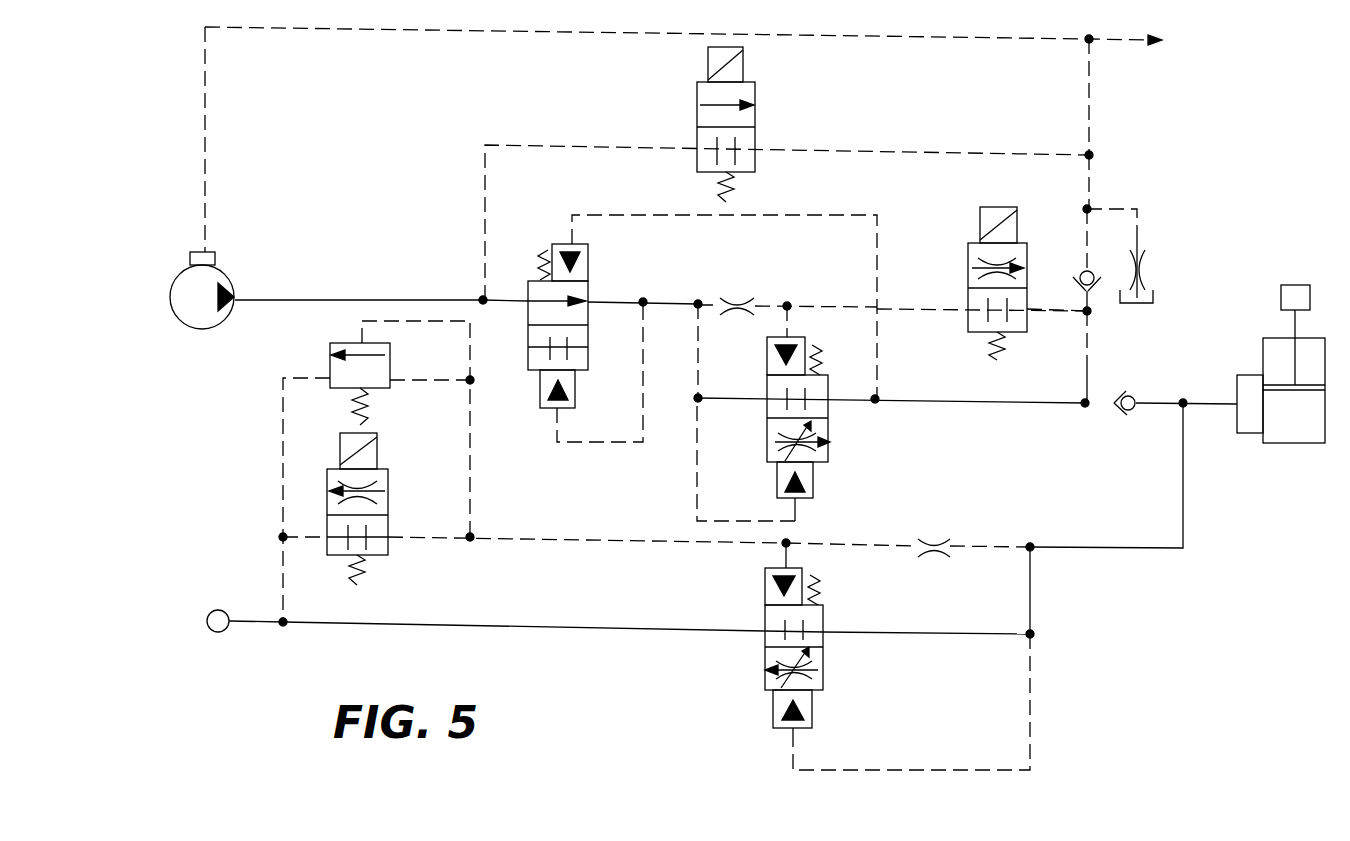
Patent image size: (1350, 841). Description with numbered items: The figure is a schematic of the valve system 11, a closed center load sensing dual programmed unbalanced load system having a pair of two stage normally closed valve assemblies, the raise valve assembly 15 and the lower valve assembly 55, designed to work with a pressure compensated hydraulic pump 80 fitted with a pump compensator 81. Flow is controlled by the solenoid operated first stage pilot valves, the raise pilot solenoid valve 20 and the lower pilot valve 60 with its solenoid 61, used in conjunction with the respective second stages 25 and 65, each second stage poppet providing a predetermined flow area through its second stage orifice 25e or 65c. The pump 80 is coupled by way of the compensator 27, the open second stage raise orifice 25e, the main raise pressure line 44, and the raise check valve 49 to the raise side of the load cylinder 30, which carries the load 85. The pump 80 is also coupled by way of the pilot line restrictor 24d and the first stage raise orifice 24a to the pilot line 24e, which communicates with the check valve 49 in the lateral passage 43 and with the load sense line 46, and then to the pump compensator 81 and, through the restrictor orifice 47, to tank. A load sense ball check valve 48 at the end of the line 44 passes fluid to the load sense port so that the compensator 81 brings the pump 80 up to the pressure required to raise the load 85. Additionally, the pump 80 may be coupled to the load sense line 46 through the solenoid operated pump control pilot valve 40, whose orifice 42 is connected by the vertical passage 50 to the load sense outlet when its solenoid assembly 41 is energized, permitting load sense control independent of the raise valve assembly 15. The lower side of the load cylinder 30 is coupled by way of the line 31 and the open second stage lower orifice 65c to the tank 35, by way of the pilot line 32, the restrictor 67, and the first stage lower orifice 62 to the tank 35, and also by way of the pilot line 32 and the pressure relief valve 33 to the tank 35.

The pressure compensated hydraulic pump 80 is at (203, 323).
The pump compensator 81 is at (217, 262).
The load sense line 46 is at (1089, 83).
The vertical passage 50 is at (578, 144).
The pump control pilot valve 40 is at (778, 124).
The solenoid assembly 41 is at (745, 73).
The orifice of pump control pilot valve 42 is at (754, 102).
The compensator 27 is at (588, 349).
The pilot line restrictor 24d is at (737, 297).
The raise second stage 25 is at (793, 412).
The second stage raise orifice 25e is at (815, 448).
The main raise pressure fluid line 44 is at (1030, 405).
The raise check valve 49 is at (1133, 395).
The raise valve assembly 15 is at (982, 339).
The raise pilot solenoid valve 20 is at (983, 279).
The first stage raise orifice 24a is at (975, 268).
The pilot line 24e is at (1057, 312).
The load sense ball check valve 48 is at (1082, 272).
The lateral passage 43 is at (1088, 352).
The restrictor orifice 47 is at (1145, 252).
The load cylinder 30 is at (1285, 444).
The load 85 is at (1281, 297).
The line 31 is at (1125, 527).
The pilot line 32 is at (985, 545).
The restrictor orifice 67 is at (932, 536).
The lower first stage pilot valve 60 is at (534, 471).
The pressure relief valve 33 is at (390, 361).
The solenoid 61 is at (340, 460).
The first stage lower orifice 62 is at (388, 495).
The tank 35 is at (218, 632).
The lower valve assembly 55 is at (631, 592).
The valve system 11 is at (840, 702).
The lower second stage 65 is at (828, 642).
The second stage lower orifice 65c is at (812, 675).